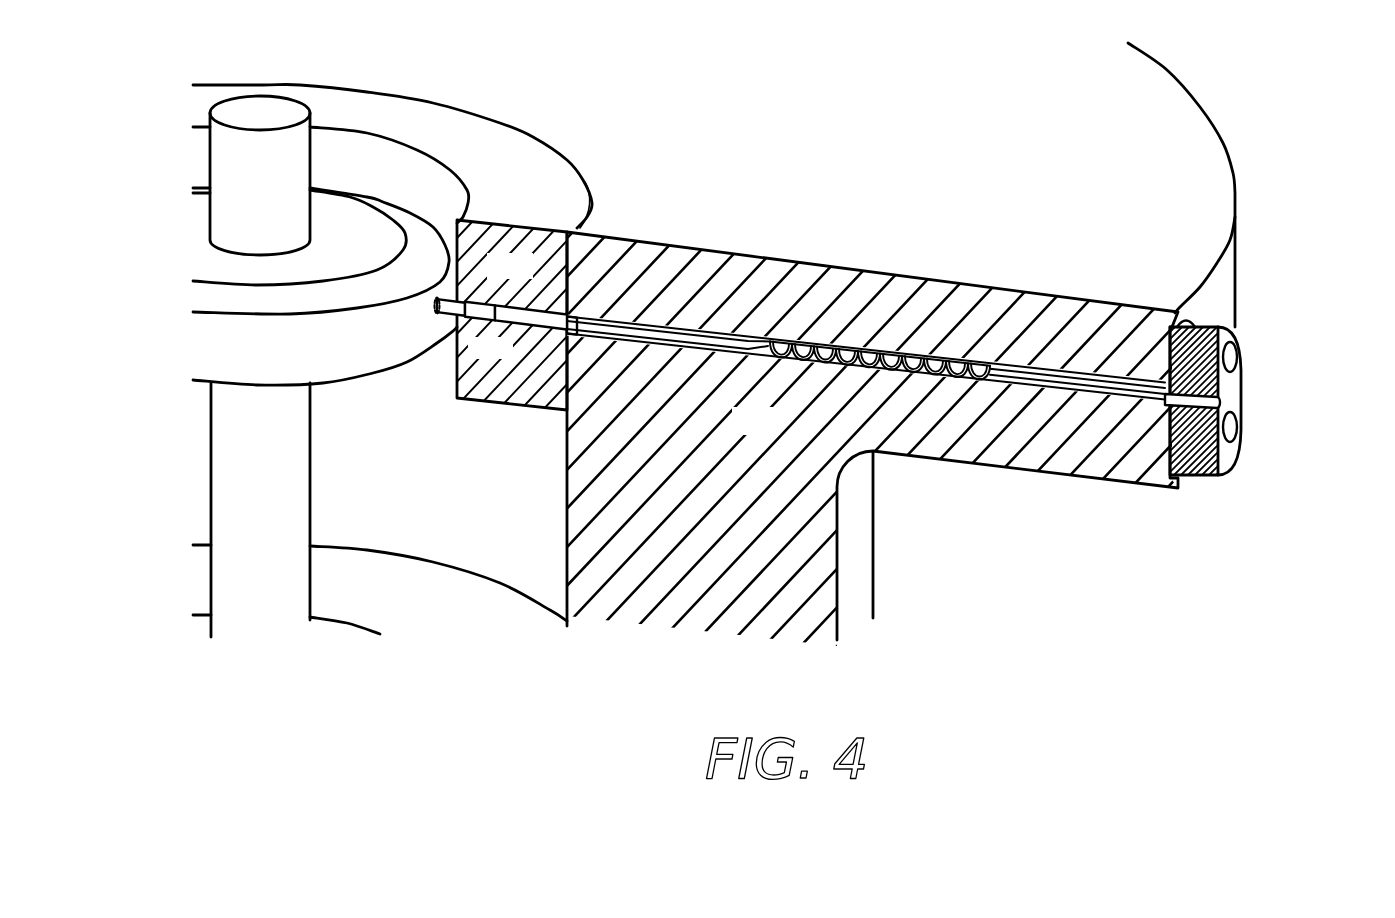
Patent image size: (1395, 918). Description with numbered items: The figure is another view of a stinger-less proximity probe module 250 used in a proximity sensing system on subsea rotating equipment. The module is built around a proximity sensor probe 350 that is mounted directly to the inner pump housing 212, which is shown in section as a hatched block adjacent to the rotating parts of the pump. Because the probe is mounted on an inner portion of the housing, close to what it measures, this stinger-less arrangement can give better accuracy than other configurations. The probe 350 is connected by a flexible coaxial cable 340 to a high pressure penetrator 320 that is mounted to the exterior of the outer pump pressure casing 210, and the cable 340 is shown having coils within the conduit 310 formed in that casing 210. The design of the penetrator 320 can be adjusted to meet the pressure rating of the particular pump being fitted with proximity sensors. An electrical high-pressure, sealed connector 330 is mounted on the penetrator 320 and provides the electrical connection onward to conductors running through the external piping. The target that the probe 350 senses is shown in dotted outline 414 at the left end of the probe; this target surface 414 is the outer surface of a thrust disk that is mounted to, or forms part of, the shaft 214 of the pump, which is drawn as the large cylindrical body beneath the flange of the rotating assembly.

The pump pressure casing 210 is at (776, 432).
The inner pump housing 212 is at (531, 276).
The shaft 214 is at (288, 472).
The proximity probe module 250 is at (1196, 416).
The conduit 310 is at (698, 330).
The high pressure penetrator 320 is at (1238, 375).
The electrical high-pressure sealed connector 330 is at (1243, 411).
The coaxial cable 340 is at (715, 342).
The proximity sensor probe 350 is at (545, 330).
The target surface 414 is at (435, 308).